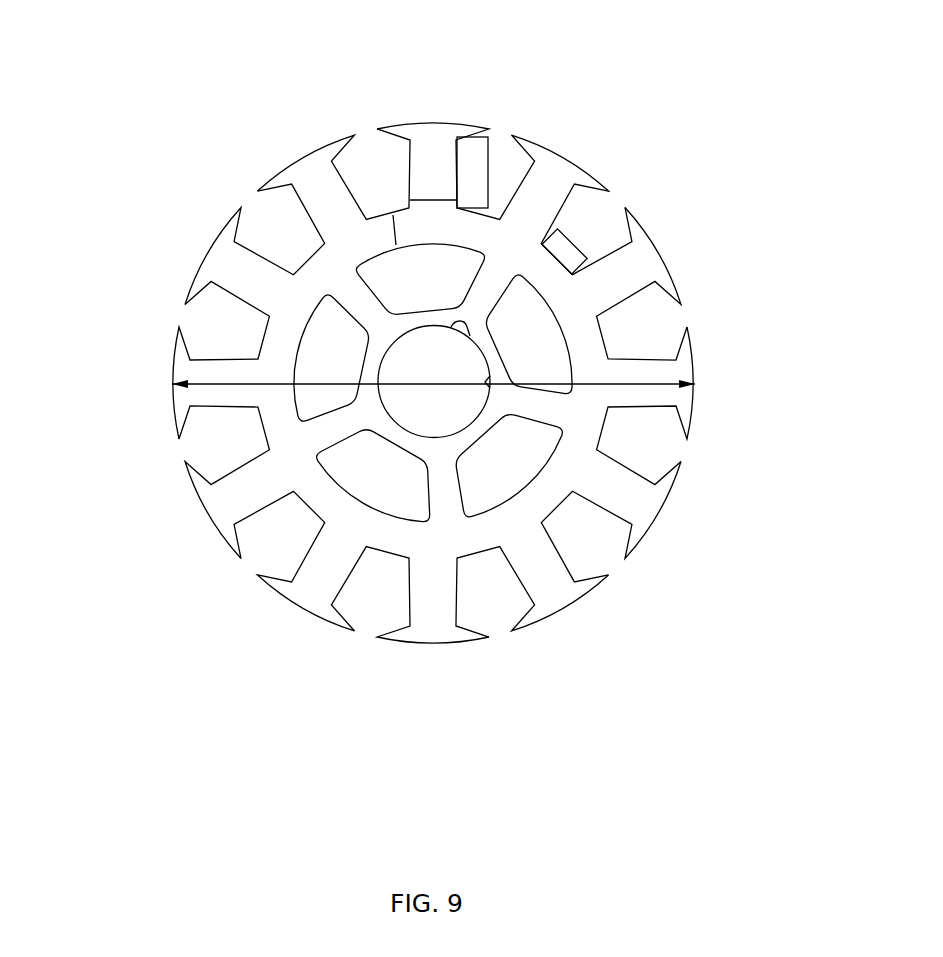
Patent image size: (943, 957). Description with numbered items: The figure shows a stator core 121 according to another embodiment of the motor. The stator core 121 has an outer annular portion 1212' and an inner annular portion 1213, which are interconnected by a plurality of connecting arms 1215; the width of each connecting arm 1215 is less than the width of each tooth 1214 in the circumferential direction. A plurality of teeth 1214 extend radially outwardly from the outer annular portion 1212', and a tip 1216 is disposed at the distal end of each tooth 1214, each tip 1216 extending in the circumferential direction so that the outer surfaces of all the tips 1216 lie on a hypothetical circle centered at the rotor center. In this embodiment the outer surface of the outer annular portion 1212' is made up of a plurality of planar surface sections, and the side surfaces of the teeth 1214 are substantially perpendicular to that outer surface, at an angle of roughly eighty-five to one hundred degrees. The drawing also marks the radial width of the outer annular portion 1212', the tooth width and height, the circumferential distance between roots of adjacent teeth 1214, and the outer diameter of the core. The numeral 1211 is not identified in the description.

The stator core 121 is at (419, 381).
The first magnet slot 1211 is at (530, 332).
The outer annular portion 1212' is at (549, 548).
The inner annular portion 1213 is at (373, 367).
The teeth 1214 is at (237, 504).
The connecting arms 1215 is at (443, 493).
The tip 1216 is at (272, 580).